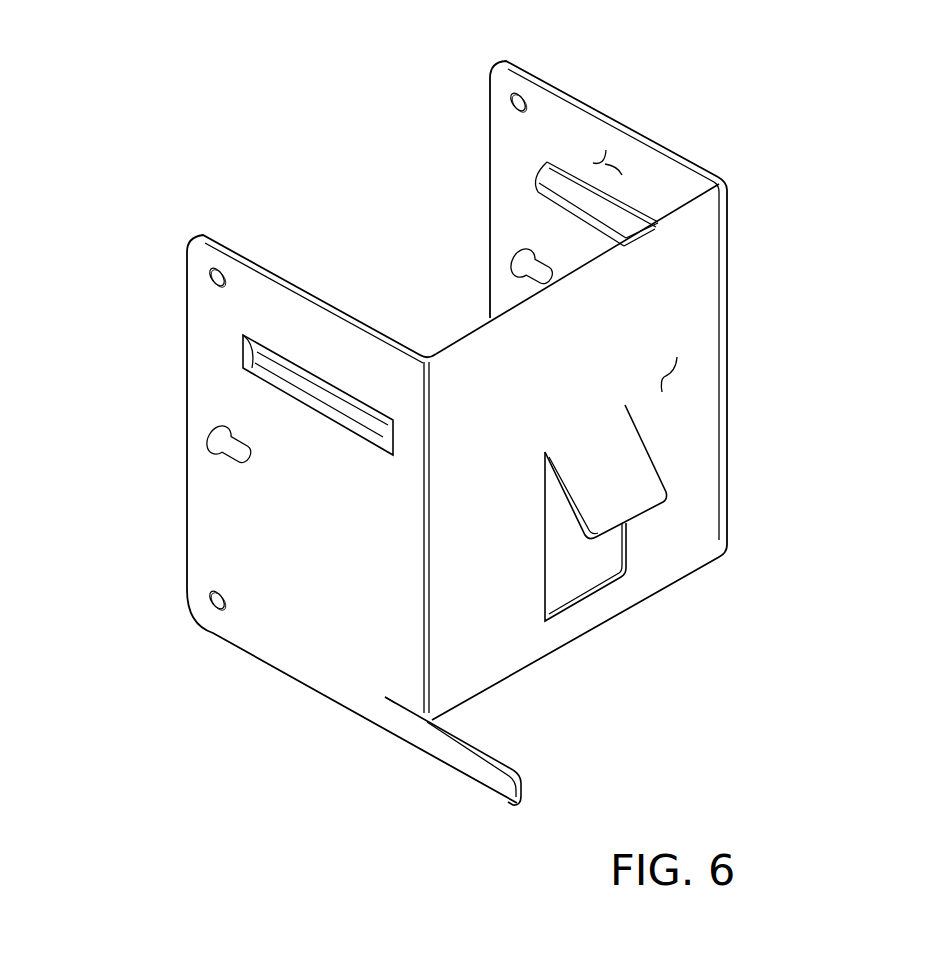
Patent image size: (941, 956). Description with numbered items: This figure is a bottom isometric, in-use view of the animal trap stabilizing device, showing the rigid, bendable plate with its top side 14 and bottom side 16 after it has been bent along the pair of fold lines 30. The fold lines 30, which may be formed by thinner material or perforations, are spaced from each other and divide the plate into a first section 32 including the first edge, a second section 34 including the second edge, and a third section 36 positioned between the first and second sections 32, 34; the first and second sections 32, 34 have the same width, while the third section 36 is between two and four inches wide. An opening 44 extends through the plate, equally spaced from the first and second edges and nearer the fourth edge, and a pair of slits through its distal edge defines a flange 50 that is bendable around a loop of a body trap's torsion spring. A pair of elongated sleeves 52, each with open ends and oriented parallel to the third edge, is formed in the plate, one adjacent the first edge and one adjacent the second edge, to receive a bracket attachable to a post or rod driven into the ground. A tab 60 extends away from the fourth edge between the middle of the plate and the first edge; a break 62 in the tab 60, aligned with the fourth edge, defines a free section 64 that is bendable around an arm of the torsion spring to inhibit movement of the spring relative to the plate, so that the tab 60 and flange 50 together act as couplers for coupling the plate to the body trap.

The top side 14 is at (607, 156).
The bottom side 16 is at (676, 374).
The fold lines 30 is at (728, 470).
The first section 32 is at (255, 632).
The second section 34 is at (561, 84).
The third section 36 is at (696, 303).
The opening 44 is at (606, 590).
The flange 50 is at (622, 487).
The sleeves 52 is at (568, 190).
The tab 60 is at (397, 737).
The break 62 is at (395, 707).
The free section 64 is at (497, 787).